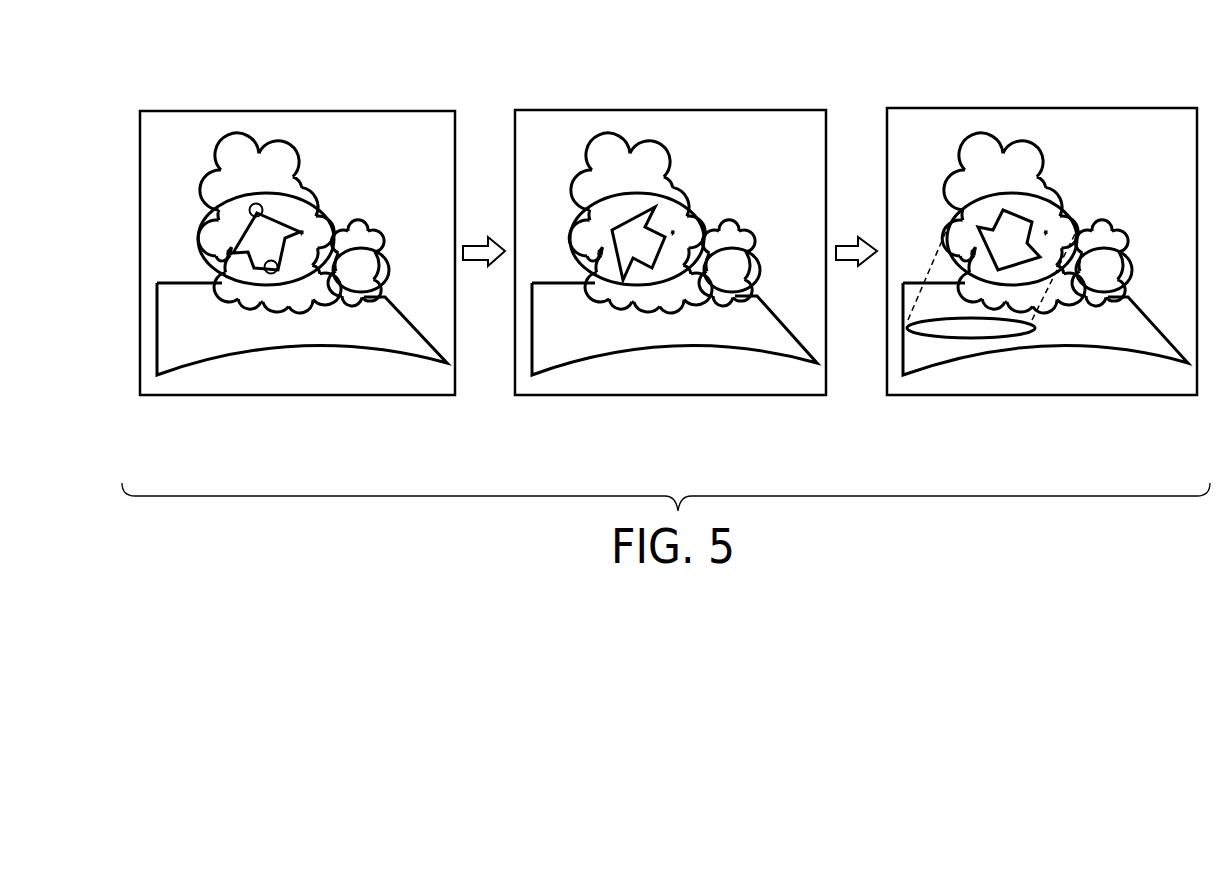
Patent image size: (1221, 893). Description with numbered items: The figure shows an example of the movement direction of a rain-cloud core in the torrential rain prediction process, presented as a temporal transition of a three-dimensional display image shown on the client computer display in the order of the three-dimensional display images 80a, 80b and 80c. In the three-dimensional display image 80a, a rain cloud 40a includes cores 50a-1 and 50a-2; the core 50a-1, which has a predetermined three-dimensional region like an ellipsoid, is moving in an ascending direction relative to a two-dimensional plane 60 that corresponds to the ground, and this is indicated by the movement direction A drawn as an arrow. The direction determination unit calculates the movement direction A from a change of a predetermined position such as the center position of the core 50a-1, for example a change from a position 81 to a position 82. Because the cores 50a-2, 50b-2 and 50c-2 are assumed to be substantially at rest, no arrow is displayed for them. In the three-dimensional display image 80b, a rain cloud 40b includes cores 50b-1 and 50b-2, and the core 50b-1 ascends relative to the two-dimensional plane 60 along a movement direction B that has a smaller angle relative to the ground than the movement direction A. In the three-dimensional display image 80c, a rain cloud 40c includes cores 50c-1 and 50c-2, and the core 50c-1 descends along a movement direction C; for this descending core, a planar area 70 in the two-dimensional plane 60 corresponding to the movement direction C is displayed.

The 3D display image 80a is at (392, 111).
The 3D display image 80b is at (763, 110).
The 3D display image 80c is at (1137, 108).
The rain cloud 40a is at (235, 140).
The rain cloud 40b is at (610, 140).
The rain cloud 40c is at (982, 140).
The core 50a-1 is at (343, 167).
The core 50a-2 is at (400, 221).
The core 50b-1 is at (720, 167).
The core 50b-2 is at (773, 221).
The core 50c-1 is at (1092, 167).
The core 50c-2 is at (1145, 221).
The movement direction A is at (280, 217).
The movement direction B is at (630, 213).
The movement direction C is at (1025, 217).
The position 82 is at (253, 205).
The position 81 is at (272, 273).
The 2D plane 60 is at (372, 337).
The planar area 70 is at (967, 330).